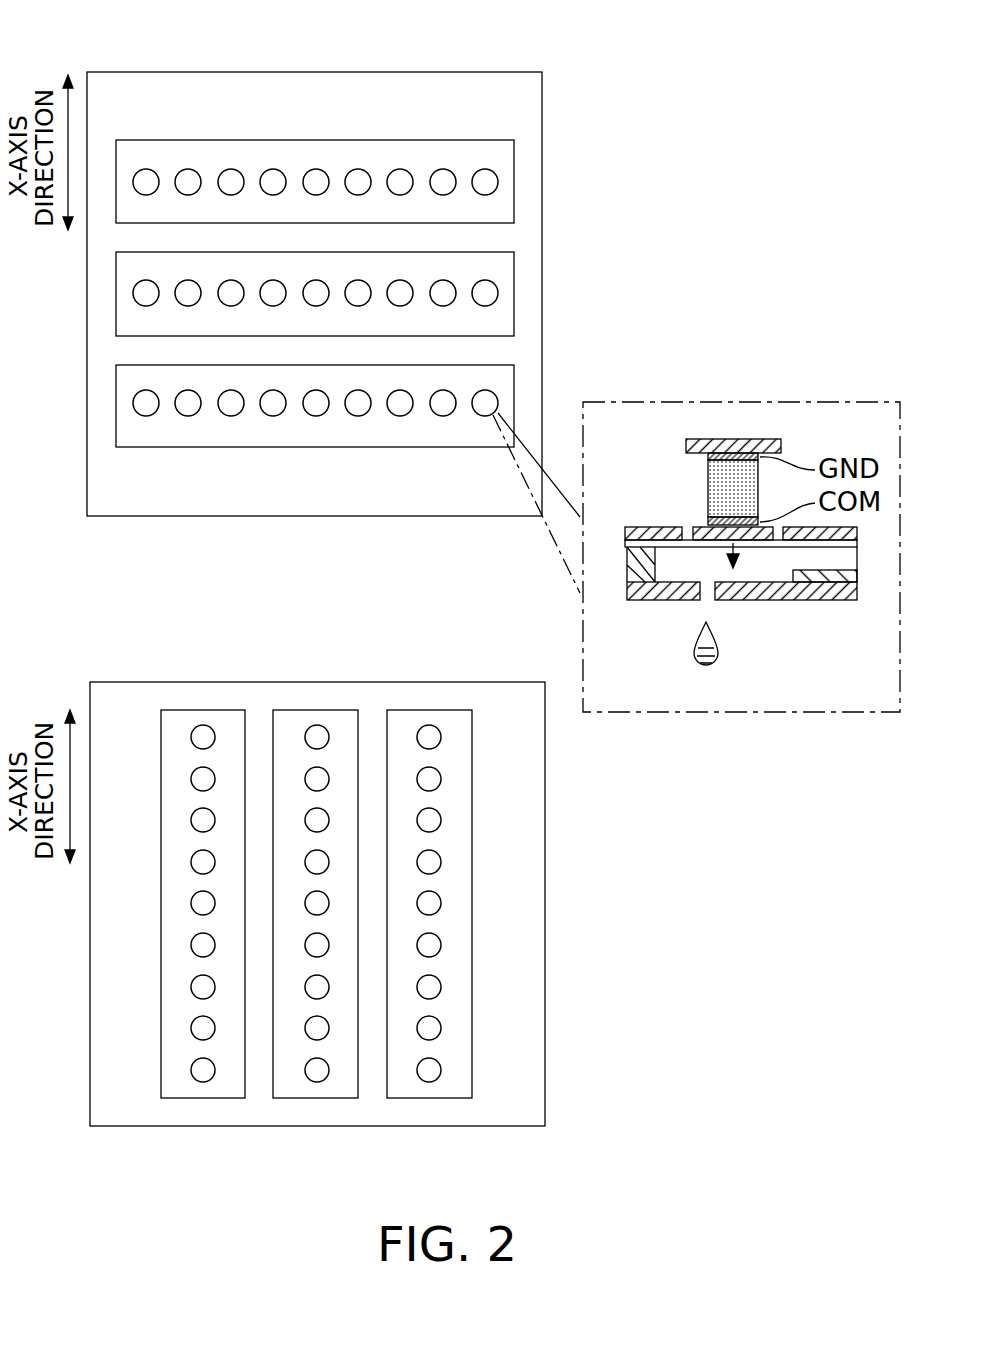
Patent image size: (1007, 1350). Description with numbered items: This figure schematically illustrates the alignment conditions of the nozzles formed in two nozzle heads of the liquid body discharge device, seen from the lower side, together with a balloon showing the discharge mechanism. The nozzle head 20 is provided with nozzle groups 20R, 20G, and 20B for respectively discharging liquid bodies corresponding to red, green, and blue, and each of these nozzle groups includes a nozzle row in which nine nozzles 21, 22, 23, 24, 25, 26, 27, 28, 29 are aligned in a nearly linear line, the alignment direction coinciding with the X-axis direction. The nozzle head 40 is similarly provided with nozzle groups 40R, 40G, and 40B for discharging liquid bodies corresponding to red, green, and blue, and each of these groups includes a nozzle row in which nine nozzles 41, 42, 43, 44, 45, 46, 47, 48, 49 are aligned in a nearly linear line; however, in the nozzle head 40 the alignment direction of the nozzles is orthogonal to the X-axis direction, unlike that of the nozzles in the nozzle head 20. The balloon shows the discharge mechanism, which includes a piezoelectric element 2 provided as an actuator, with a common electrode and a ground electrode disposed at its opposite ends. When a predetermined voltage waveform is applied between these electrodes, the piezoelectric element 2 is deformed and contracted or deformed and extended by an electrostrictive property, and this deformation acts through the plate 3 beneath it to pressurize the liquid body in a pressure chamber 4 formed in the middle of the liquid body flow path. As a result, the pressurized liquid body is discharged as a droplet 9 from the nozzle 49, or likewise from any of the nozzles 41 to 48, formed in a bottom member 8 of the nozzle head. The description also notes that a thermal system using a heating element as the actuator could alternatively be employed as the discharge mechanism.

The piezoelectric element 2 is at (723, 485).
The vibration plate 3 is at (690, 537).
The pressure chamber 4 is at (682, 563).
The bottom member 8 is at (820, 600).
The droplet 9 is at (694, 650).
The nozzle head 20 is at (510, 680).
The nozzle group 20B is at (205, 710).
The nozzle group 20G is at (319, 710).
The nozzle group 20R is at (432, 710).
The nozzle 21 is at (441, 737).
The nozzle 22 is at (441, 779).
The nozzle 23 is at (441, 820).
The nozzle 24 is at (441, 862).
The nozzle 25 is at (441, 903).
The nozzle 26 is at (441, 945).
The nozzle 27 is at (441, 987).
The nozzle 28 is at (441, 1028).
The nozzle 29 is at (441, 1070).
The nozzle head 40 is at (318, 70).
The nozzle group 40B is at (514, 178).
The nozzle group 40G is at (514, 290).
The nozzle group 40R is at (514, 393).
The nozzle 41 is at (146, 416).
The nozzle 42 is at (188, 416).
The nozzle 43 is at (231, 416).
The nozzle 44 is at (273, 416).
The nozzle 45 is at (316, 416).
The nozzle 46 is at (358, 416).
The nozzle 47 is at (400, 416).
The nozzle 48 is at (443, 416).
The nozzle 49 is at (485, 416).